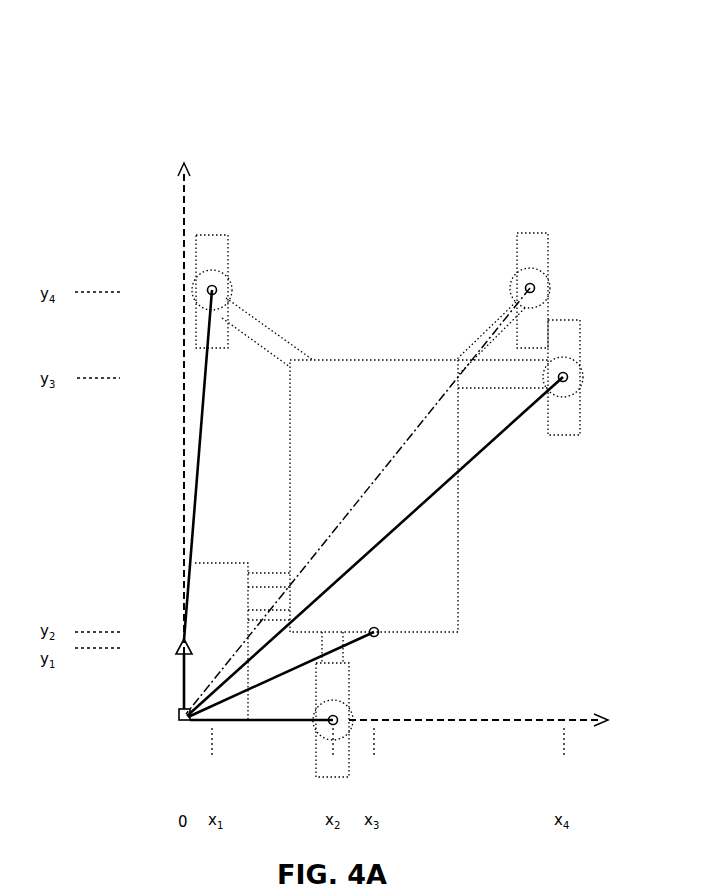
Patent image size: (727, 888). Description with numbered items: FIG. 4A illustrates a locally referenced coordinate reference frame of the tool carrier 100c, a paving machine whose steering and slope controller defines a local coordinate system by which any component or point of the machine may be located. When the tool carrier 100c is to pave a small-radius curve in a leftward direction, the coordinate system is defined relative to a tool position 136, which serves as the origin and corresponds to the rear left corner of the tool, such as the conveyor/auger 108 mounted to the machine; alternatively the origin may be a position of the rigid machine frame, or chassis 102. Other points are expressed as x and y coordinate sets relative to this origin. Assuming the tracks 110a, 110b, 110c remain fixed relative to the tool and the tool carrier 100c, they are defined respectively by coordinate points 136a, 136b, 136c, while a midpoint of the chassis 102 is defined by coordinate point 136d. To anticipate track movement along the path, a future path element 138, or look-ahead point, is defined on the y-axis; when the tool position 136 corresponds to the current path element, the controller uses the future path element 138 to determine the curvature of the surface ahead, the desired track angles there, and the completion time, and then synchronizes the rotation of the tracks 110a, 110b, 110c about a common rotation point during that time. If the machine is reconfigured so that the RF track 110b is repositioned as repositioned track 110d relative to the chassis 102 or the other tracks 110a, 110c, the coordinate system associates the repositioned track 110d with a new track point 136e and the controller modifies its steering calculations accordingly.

The tool carrier 100c is at (84, 32).
The chassis 102 is at (458, 490).
The conveyor/auger 108 is at (217, 563).
The track 110a is at (228, 256).
The RF track 110b is at (568, 435).
The track 110c is at (349, 680).
The repositioned track 110d is at (528, 233).
The tool position 136 is at (179, 717).
The coordinate point 136a is at (216, 287).
The coordinate point 136b is at (567, 375).
The coordinate point 136c is at (337, 718).
The coordinate point 136d is at (376, 628).
The new track point 136e is at (534, 290).
The future path element 138 is at (176, 648).